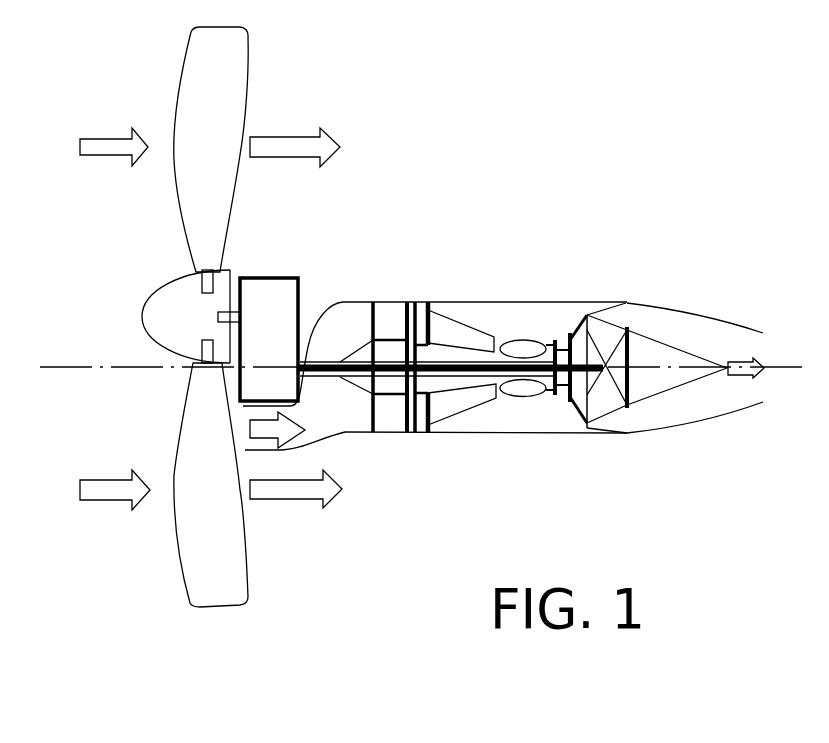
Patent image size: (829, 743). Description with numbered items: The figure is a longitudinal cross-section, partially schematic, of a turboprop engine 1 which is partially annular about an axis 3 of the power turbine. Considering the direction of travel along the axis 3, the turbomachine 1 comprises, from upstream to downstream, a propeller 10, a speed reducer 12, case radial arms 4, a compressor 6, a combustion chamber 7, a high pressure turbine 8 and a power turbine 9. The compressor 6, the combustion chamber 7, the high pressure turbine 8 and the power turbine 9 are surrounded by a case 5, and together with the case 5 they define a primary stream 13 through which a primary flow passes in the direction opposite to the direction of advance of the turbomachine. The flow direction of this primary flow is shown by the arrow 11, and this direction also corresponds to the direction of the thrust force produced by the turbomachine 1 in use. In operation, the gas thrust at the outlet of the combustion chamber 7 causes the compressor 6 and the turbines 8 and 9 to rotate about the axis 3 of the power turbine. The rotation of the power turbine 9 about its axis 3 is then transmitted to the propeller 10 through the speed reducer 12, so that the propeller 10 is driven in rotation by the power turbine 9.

The turboprop engine 1 is at (553, 212).
The axis of power turbine 3 is at (60, 368).
The case radial arms 4 is at (388, 303).
The case 5 is at (500, 433).
The compressor 6 is at (460, 403).
The combustion chamber 7 is at (520, 387).
The high pressure turbine 8 is at (575, 413).
The power turbine 9 is at (609, 318).
The propeller 10 is at (245, 55).
The arrow 11 is at (303, 135).
The speed reducer 12 is at (265, 286).
The primary stream 13 is at (305, 430).